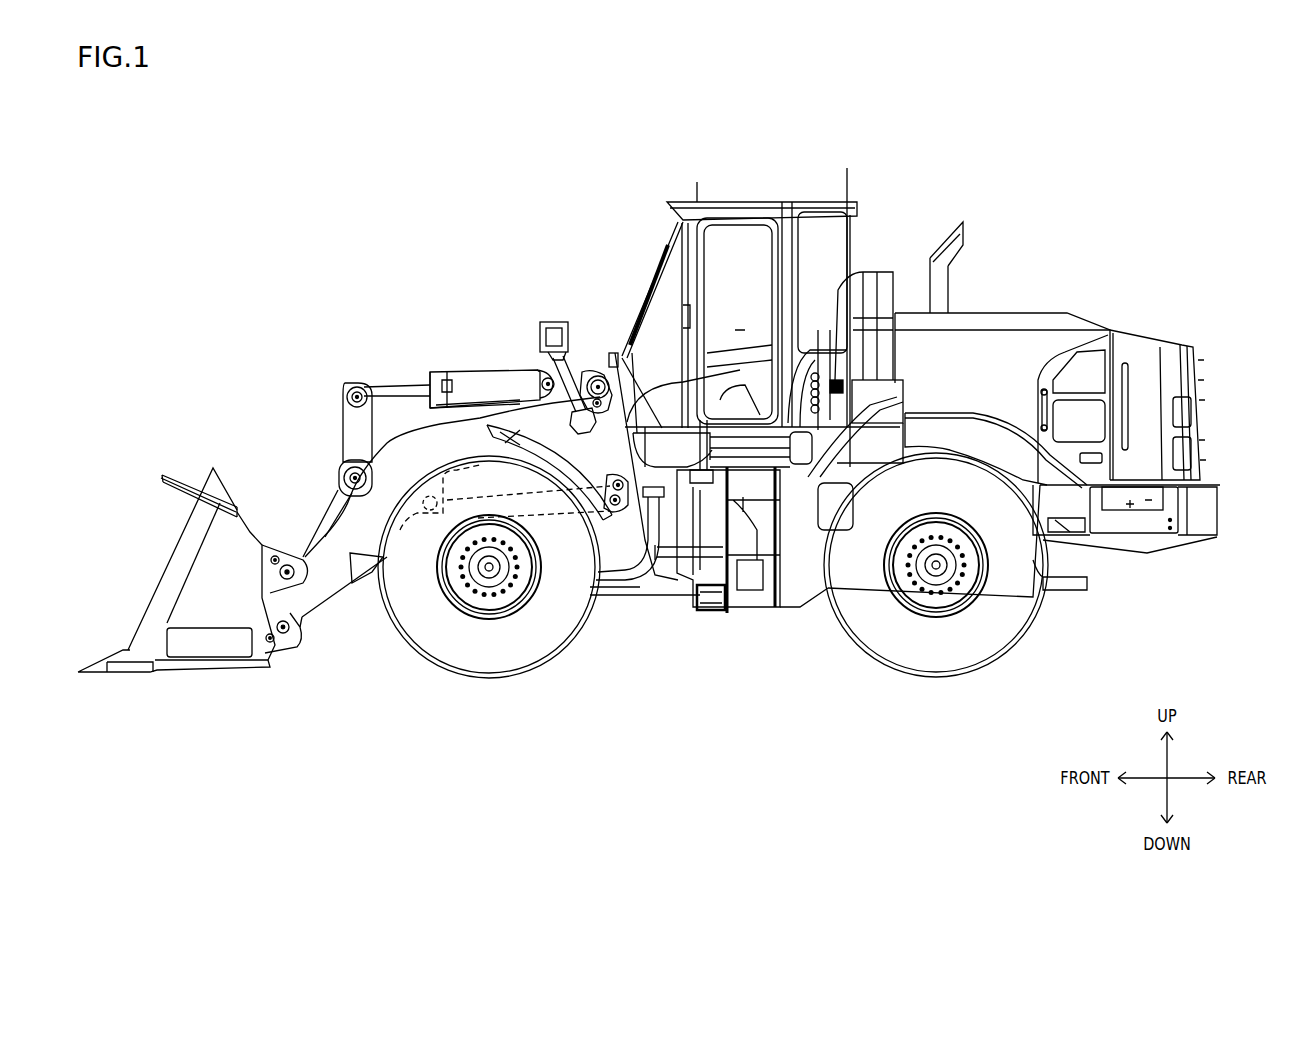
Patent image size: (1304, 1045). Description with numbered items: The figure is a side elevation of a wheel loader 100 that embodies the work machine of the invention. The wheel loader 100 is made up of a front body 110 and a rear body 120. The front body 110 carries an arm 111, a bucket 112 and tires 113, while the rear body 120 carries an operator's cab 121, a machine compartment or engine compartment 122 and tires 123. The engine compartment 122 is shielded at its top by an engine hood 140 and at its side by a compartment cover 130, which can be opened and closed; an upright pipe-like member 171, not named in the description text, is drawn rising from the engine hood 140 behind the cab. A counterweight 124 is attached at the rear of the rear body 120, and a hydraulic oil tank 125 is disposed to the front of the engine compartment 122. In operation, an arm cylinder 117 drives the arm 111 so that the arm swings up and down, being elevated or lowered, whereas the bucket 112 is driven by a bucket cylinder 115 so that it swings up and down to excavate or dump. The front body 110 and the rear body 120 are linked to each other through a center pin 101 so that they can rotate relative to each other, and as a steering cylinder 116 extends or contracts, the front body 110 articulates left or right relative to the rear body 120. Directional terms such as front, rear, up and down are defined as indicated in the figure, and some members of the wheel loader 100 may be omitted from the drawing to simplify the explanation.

The wheel loader 100 is at (670, 430).
The center pin 101 is at (711, 612).
The front body 110 is at (608, 364).
The arm 111 is at (327, 537).
The bucket 112 is at (237, 527).
The tires 113 is at (462, 652).
The bucket cylinder 115 is at (484, 370).
The steering cylinder 116 is at (655, 572).
The arm cylinder 117 is at (500, 500).
The rear body 120 is at (1058, 512).
The operator's cab 121 is at (765, 235).
The engine compartment 122 is at (950, 386).
The tires 123 is at (978, 652).
The counterweight 124 is at (1205, 520).
The hydraulic oil tank 125 is at (860, 325).
The compartment cover 130 is at (1033, 340).
The engine hood 140 is at (967, 310).
The exhaust pipe 171 is at (963, 268).